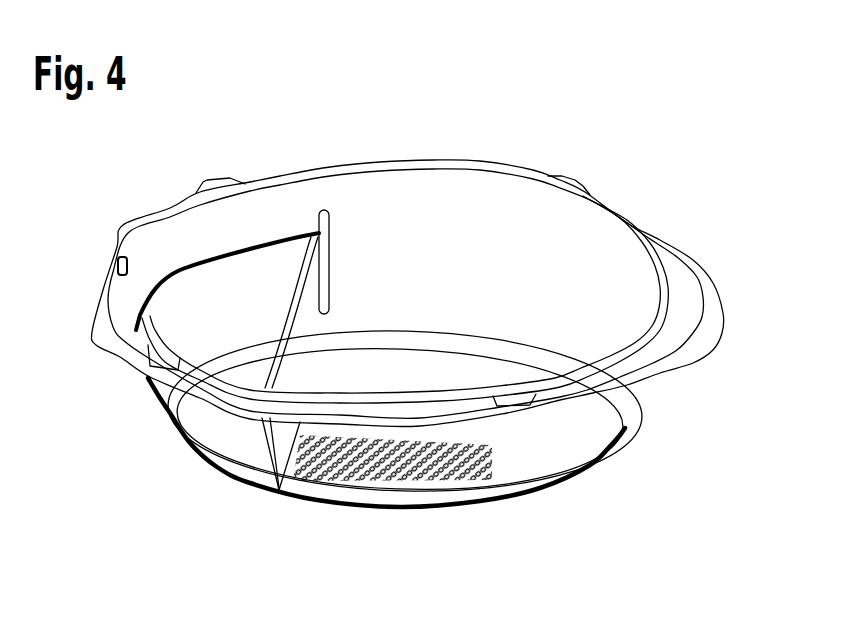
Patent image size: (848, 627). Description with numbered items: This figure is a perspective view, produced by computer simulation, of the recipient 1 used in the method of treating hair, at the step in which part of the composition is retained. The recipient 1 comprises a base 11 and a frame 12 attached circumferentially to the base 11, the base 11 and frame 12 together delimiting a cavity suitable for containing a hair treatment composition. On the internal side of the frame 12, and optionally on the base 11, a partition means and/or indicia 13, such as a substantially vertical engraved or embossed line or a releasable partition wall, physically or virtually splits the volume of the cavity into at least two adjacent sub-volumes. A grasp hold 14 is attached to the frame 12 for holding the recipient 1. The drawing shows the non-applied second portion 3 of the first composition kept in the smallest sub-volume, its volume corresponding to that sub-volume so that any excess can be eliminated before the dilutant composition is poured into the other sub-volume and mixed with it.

The recipient 1 is at (600, 130).
The second portion of the first composition 3 is at (202, 285).
The base 11 is at (438, 372).
The frame 12 is at (578, 428).
The partition means and/or indicia 13 is at (332, 243).
The grasp hold 14 is at (712, 325).